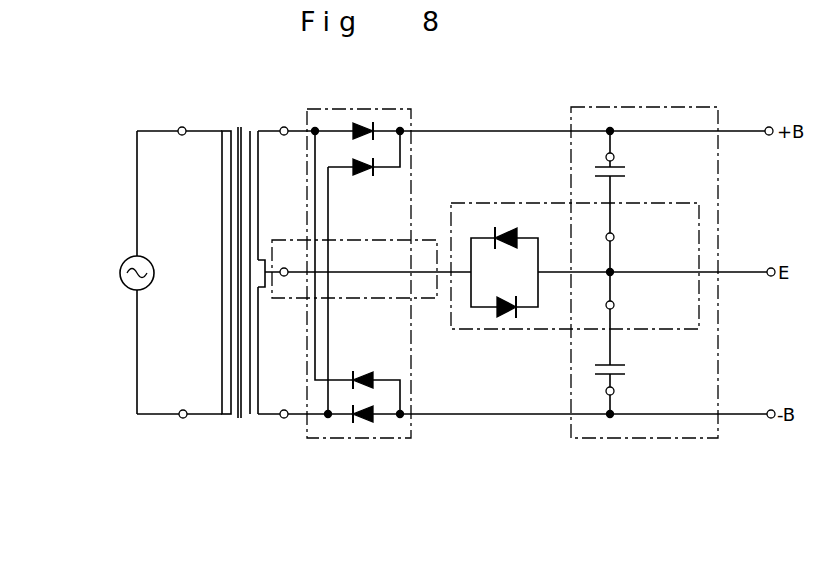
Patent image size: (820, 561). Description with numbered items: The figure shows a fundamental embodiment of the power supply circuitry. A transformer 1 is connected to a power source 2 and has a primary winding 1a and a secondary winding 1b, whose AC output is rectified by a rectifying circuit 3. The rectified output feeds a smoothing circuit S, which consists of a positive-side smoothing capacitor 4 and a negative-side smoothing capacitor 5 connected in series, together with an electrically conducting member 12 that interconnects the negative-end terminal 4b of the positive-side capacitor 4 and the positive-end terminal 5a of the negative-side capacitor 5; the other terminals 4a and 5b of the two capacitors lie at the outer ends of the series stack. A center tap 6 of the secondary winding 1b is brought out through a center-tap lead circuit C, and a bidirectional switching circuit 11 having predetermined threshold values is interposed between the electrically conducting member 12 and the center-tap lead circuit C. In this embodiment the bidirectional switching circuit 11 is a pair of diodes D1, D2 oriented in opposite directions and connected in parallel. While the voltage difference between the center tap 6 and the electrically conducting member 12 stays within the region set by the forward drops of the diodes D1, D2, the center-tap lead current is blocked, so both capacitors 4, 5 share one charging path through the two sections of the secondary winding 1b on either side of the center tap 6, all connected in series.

The transformer 1 is at (239, 418).
The primary winding 1a is at (222, 278).
The secondary winding 1b is at (256, 392).
The power source 2 is at (122, 284).
The rectifying circuit 3 is at (393, 108).
The positive-side smoothing capacitor 4 is at (626, 172).
The first capacitor terminal 4a is at (616, 157).
The negative-end terminal 4b is at (616, 234).
The negative-side smoothing capacitor 5 is at (630, 367).
The positive-end terminal 5a is at (616, 305).
The second capacitor terminal 5b is at (616, 391).
The center tap 6 is at (285, 262).
The bidirectional switching circuit 11 is at (480, 330).
The electrically conducting member 12 is at (612, 257).
The smoothing circuit S is at (688, 106).
The center-tap lead circuit C is at (425, 238).
The diode D1 is at (501, 243).
The diode D2 is at (507, 301).